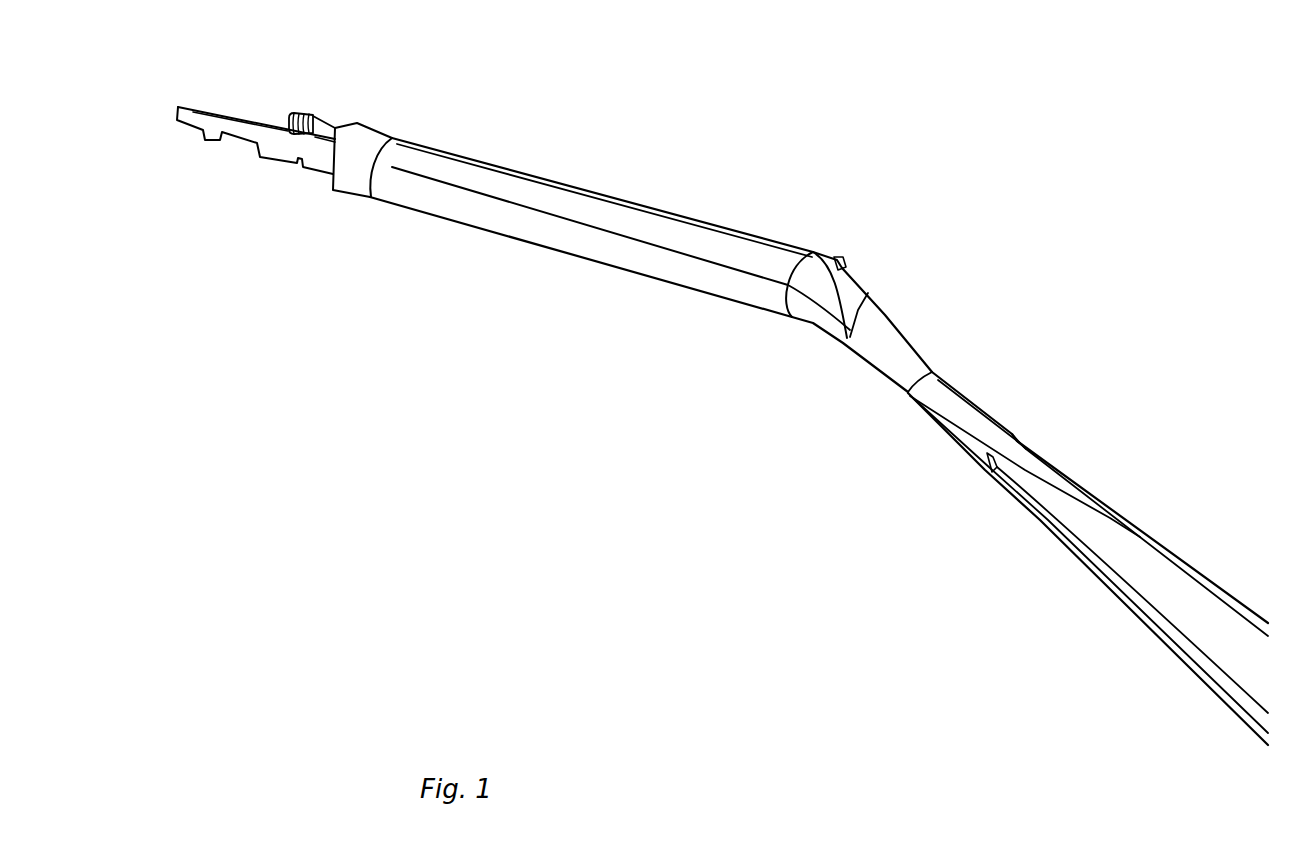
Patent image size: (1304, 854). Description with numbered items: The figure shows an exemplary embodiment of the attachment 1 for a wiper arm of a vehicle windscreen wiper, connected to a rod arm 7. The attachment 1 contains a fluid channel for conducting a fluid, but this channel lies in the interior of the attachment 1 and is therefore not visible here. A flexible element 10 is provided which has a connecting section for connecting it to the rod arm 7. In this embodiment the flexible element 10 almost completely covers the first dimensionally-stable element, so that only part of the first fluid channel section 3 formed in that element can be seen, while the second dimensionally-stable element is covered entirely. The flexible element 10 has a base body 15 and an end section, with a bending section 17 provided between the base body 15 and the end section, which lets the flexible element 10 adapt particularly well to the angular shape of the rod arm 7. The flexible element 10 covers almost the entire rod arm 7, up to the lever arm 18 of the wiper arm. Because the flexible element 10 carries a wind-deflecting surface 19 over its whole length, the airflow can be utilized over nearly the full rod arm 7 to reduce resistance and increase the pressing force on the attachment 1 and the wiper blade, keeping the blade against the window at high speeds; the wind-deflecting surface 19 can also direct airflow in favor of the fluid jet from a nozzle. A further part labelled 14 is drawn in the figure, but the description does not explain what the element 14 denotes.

The surgical instrument 1 is at (644, 174).
The coupling with locking knob 3 is at (340, 130).
The guide rail 7 is at (190, 115).
The handle housing 10 is at (674, 303).
The joint neck section 14 is at (885, 370).
The housing shell 15 is at (557, 209).
The articulation joint 17 is at (818, 286).
The shaft 18 is at (953, 382).
The housing rim 19 is at (779, 230).